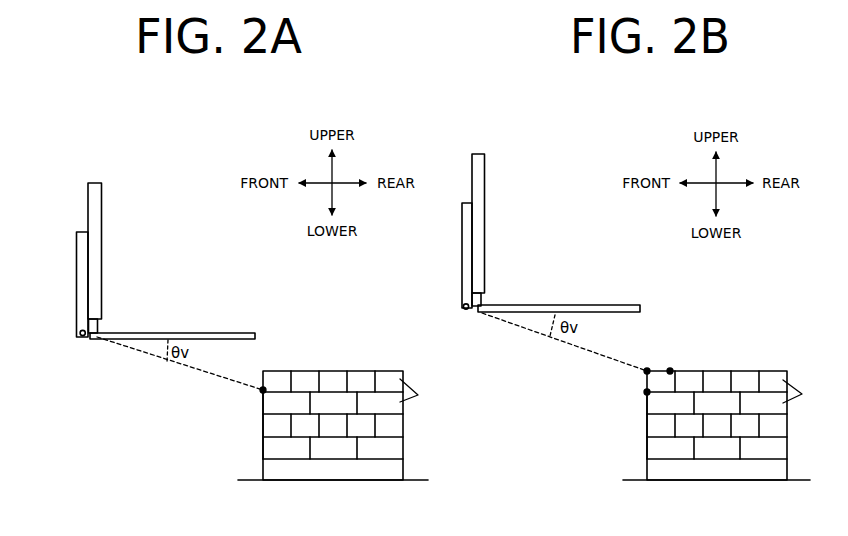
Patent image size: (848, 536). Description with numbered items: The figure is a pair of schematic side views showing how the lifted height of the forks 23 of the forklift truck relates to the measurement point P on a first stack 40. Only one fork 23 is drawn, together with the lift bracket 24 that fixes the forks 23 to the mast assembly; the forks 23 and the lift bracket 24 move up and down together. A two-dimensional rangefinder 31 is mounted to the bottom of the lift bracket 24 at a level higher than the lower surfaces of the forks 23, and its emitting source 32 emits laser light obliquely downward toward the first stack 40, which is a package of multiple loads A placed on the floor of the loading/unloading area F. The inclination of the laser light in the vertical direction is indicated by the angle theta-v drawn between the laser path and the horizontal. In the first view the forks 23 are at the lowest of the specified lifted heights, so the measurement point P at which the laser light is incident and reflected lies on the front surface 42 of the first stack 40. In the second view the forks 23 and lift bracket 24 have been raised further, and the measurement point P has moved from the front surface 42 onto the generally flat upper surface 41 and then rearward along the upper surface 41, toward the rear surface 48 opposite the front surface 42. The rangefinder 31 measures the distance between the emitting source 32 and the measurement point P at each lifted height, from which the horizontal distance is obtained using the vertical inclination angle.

In FIG. 2A, the fork 23 is at (243, 333).
In FIG. 2B, the fork 23 is at (628, 305).
In FIG. 2A, the lift bracket 24 is at (76, 257).
In FIG. 2B, the lift bracket 24 is at (462, 230).
In FIG. 2A, the two-dimensional rangefinder 31 is at (73, 340).
In FIG. 2B, the two-dimensional rangefinder 31 is at (457, 312).
In FIG. 2A, the emitting source 32 is at (80, 341).
In FIG. 2B, the emitting source 32 is at (466, 313).
In FIG. 2A, the first stack of loads 40 is at (335, 406).
In FIG. 2B, the first stack of loads 40 is at (718, 406).
In FIG. 2A, the upper surface 41 is at (362, 370).
In FIG. 2B, the upper surface 41 is at (746, 370).
In FIG. 2A, the front surface 42 is at (263, 423).
In FIG. 2B, the front surface 42 is at (647, 423).
In FIG. 2A, the rear surface 48 is at (405, 448).
In FIG. 2B, the rear surface 48 is at (788, 449).
In FIG. 2A, the measurement point P is at (258, 393).
In FIG. 2B, the measurement point P is at (670, 367).
In FIG. 2A, the load A is at (418, 392).
In FIG. 2B, the load A is at (801, 393).
In FIG. 2A, the loading/unloading area F is at (387, 477).
In FIG. 2B, the loading/unloading area F is at (770, 477).